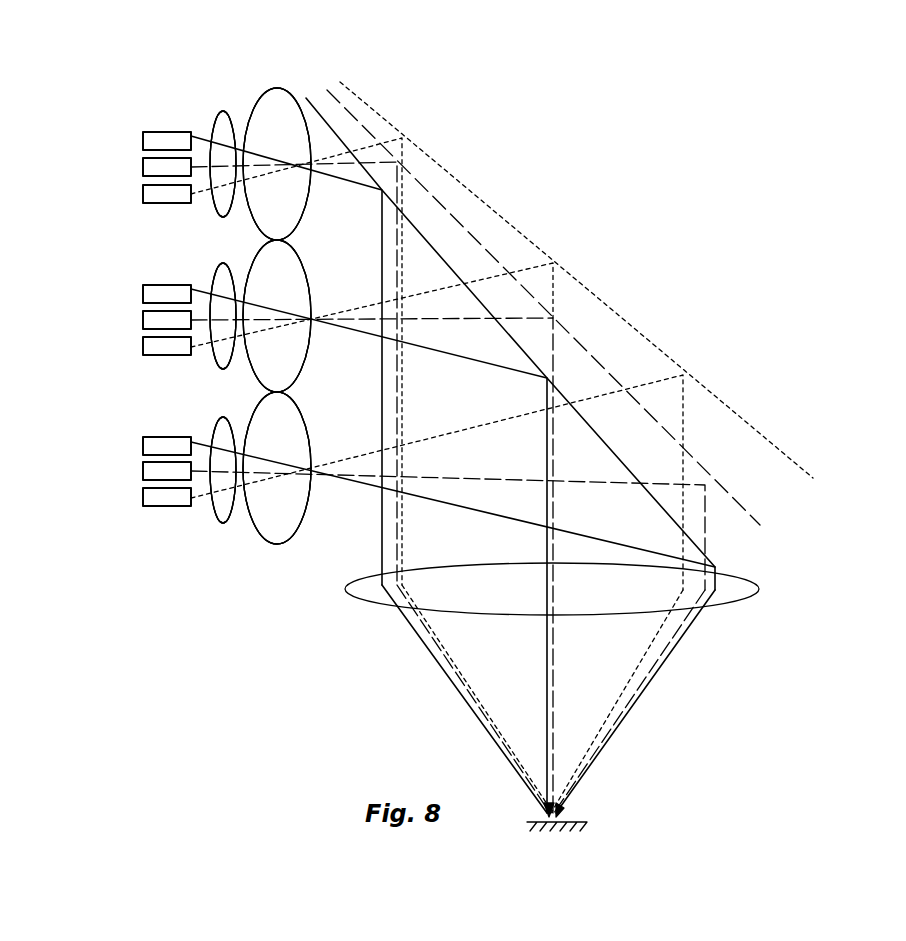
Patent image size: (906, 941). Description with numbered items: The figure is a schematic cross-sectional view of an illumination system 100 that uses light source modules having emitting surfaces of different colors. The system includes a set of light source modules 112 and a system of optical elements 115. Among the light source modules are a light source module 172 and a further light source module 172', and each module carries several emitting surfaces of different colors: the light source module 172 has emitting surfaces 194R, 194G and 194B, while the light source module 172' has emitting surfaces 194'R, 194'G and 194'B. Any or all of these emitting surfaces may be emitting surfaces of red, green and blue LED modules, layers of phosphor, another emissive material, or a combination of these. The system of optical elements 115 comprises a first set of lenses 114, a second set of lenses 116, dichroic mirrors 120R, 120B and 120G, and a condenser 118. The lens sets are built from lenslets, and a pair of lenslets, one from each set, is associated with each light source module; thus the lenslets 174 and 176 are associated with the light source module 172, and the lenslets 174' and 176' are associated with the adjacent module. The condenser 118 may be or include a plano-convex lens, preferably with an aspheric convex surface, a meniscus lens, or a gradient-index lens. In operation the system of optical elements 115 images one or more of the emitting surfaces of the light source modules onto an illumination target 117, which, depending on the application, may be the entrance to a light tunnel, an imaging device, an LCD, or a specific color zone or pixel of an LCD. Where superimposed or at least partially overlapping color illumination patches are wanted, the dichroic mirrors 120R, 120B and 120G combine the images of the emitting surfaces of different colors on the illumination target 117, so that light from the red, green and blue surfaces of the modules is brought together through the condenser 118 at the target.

The illumination system 100 is at (677, 716).
The set of light source modules 112 is at (163, 97).
The first set of lenses 114 is at (222, 83).
The system of optical elements 115 is at (207, 608).
The second set of lenses 116 is at (282, 68).
The illumination target 117 is at (572, 826).
The condenser 118 is at (722, 608).
The dichroic mirror 120R is at (755, 426).
The dichroic mirror 120G is at (730, 485).
The dichroic mirror 120B is at (694, 537).
The light source module 172 is at (123, 494).
The light source module 172' is at (121, 338).
The lenslet 174 is at (207, 497).
The lenslet 174' is at (195, 343).
The lenslet 176 is at (277, 497).
The lenslet 176' is at (303, 329).
The emitting surface 194B is at (143, 444).
The emitting surface 194G is at (143, 471).
The emitting surface 194R is at (143, 498).
The emitting surface 194'B is at (292, 536).
The emitting surface 194'G is at (295, 552).
The emitting surface 194'R is at (295, 309).